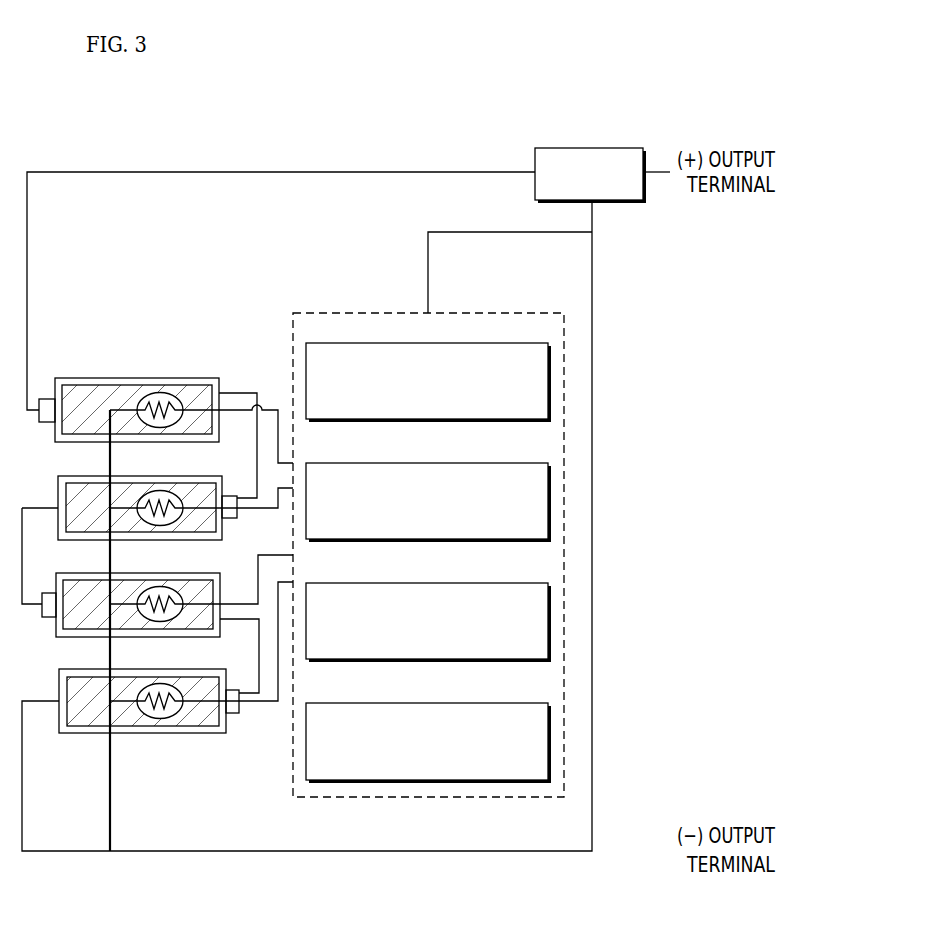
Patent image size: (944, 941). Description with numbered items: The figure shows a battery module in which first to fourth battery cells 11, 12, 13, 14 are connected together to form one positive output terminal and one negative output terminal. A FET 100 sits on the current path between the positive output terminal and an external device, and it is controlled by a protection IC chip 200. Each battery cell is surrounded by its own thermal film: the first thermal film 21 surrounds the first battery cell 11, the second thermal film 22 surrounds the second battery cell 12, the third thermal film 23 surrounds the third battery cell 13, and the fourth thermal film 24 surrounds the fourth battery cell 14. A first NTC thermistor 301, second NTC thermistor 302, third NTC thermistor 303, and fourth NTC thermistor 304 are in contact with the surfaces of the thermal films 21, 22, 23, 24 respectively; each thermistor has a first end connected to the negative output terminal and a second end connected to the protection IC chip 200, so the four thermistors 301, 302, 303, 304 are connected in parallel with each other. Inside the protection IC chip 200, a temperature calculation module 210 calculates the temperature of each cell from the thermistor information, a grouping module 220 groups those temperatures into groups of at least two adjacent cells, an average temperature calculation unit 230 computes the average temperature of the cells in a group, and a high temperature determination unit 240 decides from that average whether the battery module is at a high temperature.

The FET 100 is at (597, 148).
The protection IC chip 200 is at (547, 313).
The temperature calculation module 210 is at (432, 343).
The grouping module 220 is at (432, 463).
The average temperature calculation unit 230 is at (432, 583).
The high temperature determination unit 240 is at (432, 703).
The first battery cell 11 is at (59, 437).
The second battery cell 12 is at (223, 532).
The third battery cell 13 is at (59, 632).
The fourth battery cell 14 is at (226, 727).
The first thermal film 21 is at (93, 392).
The second thermal film 22 is at (207, 492).
The third thermal film 23 is at (207, 590).
The fourth thermal film 24 is at (207, 687).
The first NTC thermistor 301 is at (170, 392).
The second NTC thermistor 302 is at (170, 492).
The third NTC thermistor 303 is at (170, 590).
The fourth NTC thermistor 304 is at (170, 687).